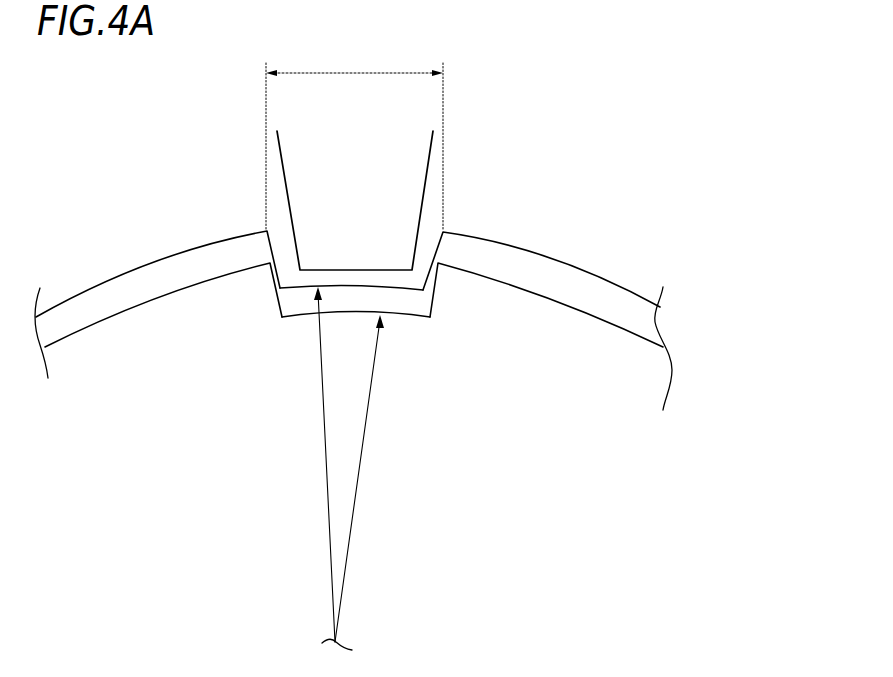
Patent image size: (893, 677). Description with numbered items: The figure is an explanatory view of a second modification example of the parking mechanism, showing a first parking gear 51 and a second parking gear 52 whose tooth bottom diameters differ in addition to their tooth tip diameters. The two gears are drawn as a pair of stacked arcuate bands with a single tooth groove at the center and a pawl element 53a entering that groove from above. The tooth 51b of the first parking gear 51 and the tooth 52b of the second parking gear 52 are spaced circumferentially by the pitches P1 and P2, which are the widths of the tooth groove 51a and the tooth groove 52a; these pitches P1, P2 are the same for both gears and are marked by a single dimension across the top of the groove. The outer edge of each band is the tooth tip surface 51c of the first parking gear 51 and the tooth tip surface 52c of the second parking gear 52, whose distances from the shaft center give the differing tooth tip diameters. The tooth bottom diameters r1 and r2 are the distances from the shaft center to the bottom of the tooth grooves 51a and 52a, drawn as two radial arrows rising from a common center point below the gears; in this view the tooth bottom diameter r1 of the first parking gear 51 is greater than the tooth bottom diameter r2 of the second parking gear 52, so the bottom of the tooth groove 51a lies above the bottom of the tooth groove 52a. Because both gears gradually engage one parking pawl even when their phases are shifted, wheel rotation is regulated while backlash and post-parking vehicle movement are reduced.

The first parking gear 51 is at (158, 292).
The tooth 51b is at (158, 304).
The tooth tip surface 51c is at (107, 310).
The second parking gear 52 is at (614, 316).
The tooth 52b is at (547, 321).
The tooth tip surface 52c is at (615, 282).
The tooth groove 51a is at (418, 289).
The tooth groove 52a is at (403, 312).
The groove / protrusion 53a is at (426, 179).
The tooth bottom diameter r1 is at (321, 468).
The tooth bottom diameter r2 is at (363, 478).
The pitch P1 is at (354, 135).
The pitch P2 is at (354, 135).